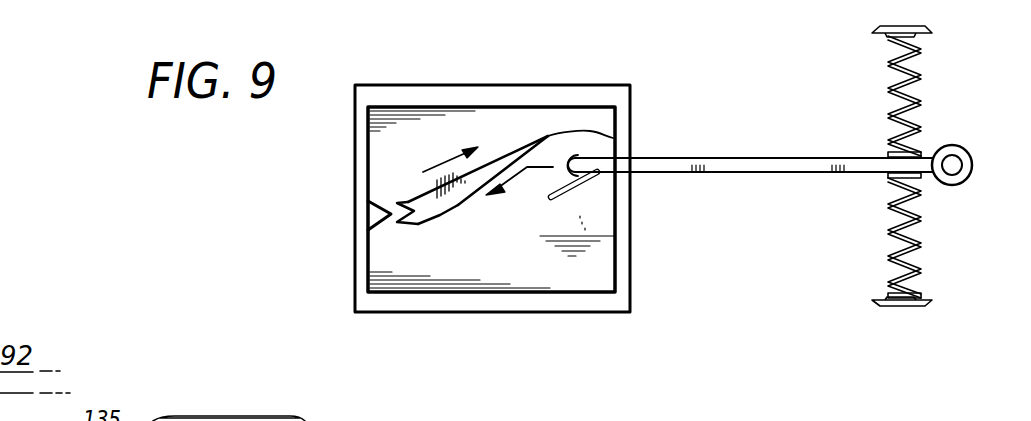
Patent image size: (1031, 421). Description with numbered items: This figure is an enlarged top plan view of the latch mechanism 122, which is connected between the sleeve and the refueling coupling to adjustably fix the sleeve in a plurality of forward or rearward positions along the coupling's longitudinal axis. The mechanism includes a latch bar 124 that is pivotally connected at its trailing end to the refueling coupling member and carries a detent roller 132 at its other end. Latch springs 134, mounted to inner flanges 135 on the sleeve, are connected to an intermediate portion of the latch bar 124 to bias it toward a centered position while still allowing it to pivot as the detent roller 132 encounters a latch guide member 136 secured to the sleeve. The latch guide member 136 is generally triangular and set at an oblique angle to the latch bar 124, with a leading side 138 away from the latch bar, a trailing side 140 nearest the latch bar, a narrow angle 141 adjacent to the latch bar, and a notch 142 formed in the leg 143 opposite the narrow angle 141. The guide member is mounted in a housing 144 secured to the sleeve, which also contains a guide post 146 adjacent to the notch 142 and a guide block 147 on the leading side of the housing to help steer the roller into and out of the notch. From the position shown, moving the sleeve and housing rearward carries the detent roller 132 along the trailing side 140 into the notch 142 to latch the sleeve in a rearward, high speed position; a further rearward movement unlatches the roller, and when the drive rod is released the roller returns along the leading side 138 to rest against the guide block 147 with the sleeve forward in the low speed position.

The latch mechanism 122 is at (299, 222).
The latch bar 124 is at (766, 157).
The detent roller 132 is at (576, 157).
The latch springs 134 is at (898, 60).
The inner flanges 135 is at (892, 26).
The latch guide member 136 is at (441, 205).
The leading side 138 is at (498, 160).
The trailing side 140 is at (460, 206).
The narrow angle 141 is at (613, 138).
The notch 142 is at (371, 248).
The leg 143 is at (396, 202).
The housing 144 is at (566, 313).
The guide post 146 is at (380, 207).
The guide block 147 is at (578, 176).